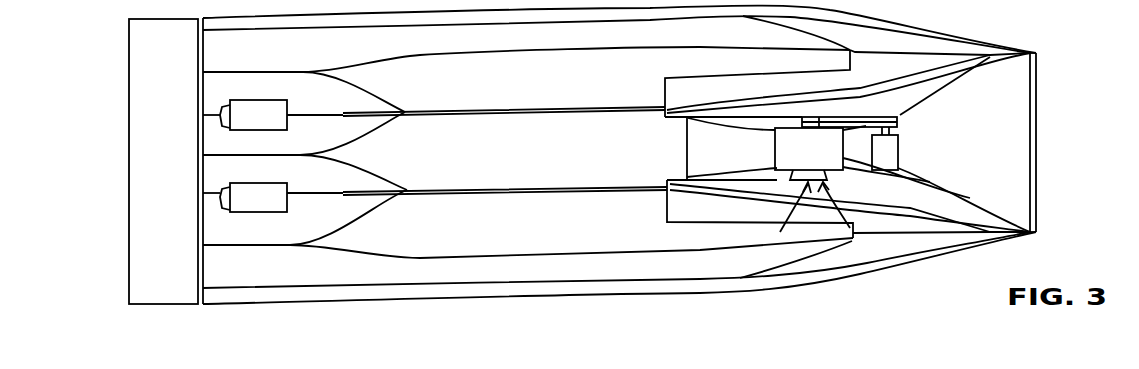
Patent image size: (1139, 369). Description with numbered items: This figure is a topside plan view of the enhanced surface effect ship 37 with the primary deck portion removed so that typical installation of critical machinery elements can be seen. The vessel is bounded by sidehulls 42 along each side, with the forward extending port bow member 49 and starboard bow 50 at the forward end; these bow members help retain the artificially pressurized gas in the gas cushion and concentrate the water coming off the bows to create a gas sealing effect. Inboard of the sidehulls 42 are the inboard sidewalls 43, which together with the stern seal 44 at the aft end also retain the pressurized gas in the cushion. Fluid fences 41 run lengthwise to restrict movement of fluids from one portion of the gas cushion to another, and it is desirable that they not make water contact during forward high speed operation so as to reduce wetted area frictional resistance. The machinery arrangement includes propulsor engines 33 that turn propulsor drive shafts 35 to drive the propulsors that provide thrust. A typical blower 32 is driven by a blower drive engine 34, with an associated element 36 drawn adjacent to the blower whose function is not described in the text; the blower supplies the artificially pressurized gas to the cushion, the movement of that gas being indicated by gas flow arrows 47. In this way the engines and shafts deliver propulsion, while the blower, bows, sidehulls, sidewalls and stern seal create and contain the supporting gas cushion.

The blower 32 is at (820, 158).
The propulsor engines 33 is at (272, 127).
The blower drive engine 34 is at (898, 155).
The propulsor drive shafts 35 is at (206, 114).
The propeller 36 is at (835, 178).
The enhanced surface effect ship 37 is at (1003, 135).
The fluid fences 41 is at (523, 108).
The sidehulls 42 is at (632, 289).
The inboard sidewalls 43 is at (673, 87).
The stern seal 44 is at (332, 110).
The gas flow arrows 47 is at (795, 214).
The port bow member 49 is at (890, 51).
The starboard bow 50 is at (893, 225).